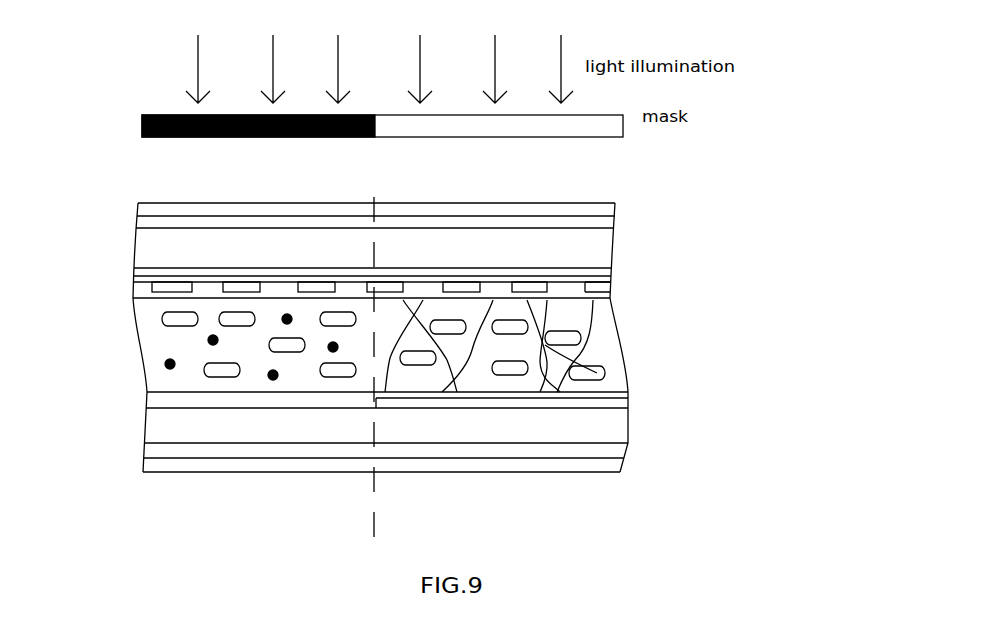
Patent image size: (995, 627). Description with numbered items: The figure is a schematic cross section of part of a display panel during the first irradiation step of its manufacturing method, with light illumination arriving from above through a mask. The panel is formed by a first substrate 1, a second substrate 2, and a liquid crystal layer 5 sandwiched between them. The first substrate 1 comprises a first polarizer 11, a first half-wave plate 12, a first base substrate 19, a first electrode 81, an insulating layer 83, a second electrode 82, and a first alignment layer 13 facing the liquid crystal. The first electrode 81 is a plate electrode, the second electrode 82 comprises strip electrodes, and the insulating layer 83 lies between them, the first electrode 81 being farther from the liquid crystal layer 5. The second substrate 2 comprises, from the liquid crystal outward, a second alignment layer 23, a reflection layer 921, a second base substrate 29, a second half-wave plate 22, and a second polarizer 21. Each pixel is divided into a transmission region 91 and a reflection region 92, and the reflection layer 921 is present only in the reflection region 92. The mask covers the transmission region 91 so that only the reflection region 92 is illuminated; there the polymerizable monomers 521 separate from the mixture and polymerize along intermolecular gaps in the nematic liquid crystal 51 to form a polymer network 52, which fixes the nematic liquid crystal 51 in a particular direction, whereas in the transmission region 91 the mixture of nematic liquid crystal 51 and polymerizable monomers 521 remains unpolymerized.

The first substrate 1 is at (762, 211).
The first polarizer 11 is at (615, 210).
The first half-wave plate 12 is at (157, 222).
The first base substrate 19 is at (598, 252).
The first electrode 81 is at (147, 272).
The second electrode 82 is at (535, 286).
The insulating layer 83 is at (610, 280).
The first alignment layer 13 is at (147, 288).
The liquid crystal layer 5 is at (762, 302).
The nematic liquid crystal 51 is at (593, 373).
The polymer network 52 is at (593, 322).
The polymerizable monomers 521 is at (168, 365).
The second substrate 2 is at (762, 398).
The second alignment layer 23 is at (168, 397).
The reflection layer 921 is at (518, 403).
The second base substrate 29 is at (165, 430).
The second half-wave plate 22 is at (615, 452).
The second polarizer 21 is at (160, 470).
The transmission region 91 is at (261, 460).
The reflection region 92 is at (413, 374).